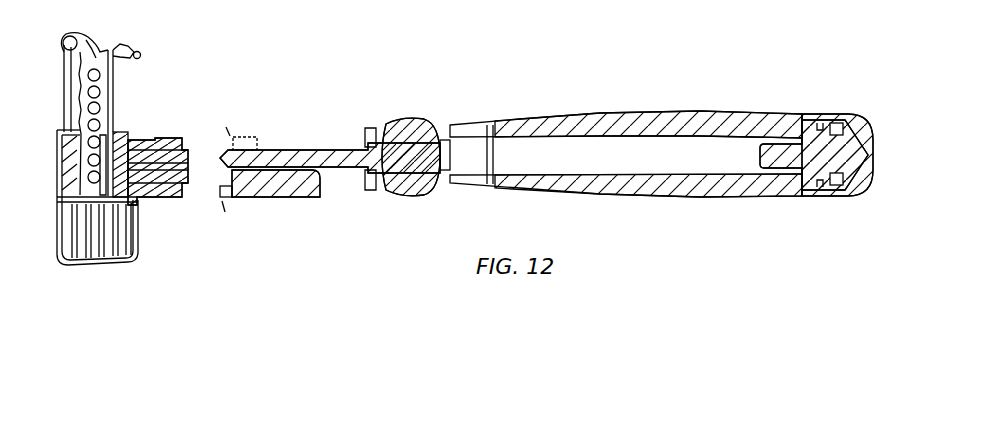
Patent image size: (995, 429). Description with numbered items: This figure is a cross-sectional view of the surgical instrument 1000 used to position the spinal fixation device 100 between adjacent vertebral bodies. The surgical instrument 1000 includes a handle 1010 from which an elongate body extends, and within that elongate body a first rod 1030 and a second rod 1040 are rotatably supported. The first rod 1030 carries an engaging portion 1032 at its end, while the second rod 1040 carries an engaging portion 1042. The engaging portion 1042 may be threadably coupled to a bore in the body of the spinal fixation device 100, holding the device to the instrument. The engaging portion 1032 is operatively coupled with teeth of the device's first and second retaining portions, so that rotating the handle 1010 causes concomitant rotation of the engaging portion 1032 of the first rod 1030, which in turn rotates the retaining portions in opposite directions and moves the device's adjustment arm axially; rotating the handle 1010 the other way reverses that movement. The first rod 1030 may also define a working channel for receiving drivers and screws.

The spinal fixation device 100 is at (130, 284).
The surgical instrument 1000 is at (522, 94).
The handle 1010 is at (628, 116).
The first rod 1030 is at (298, 150).
The engaging portion 1032 is at (130, 134).
The second rod 1040 is at (307, 200).
The engaging portion 1042 is at (137, 203).